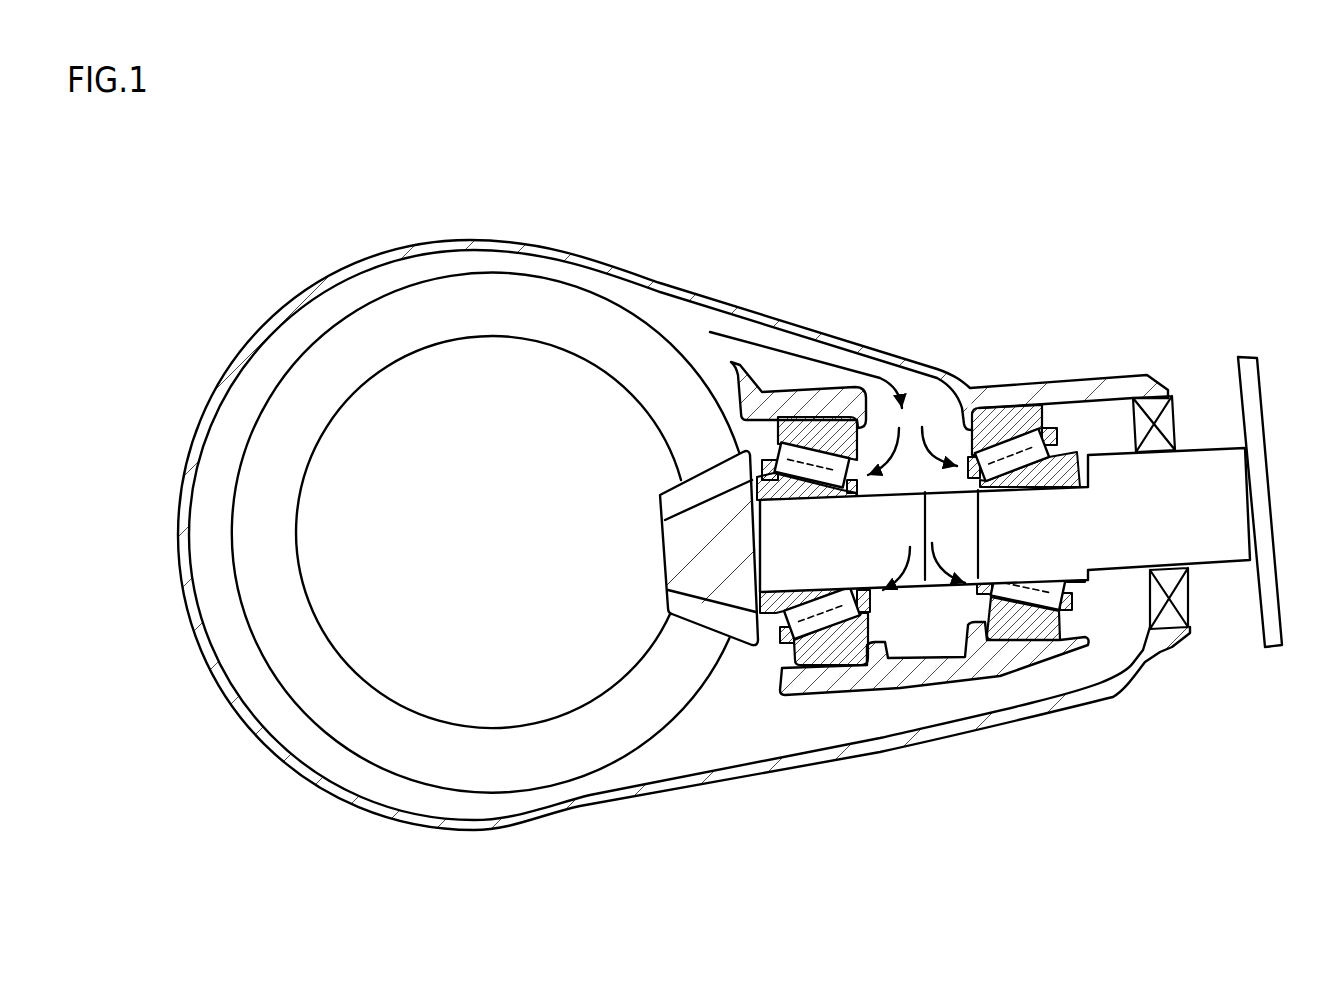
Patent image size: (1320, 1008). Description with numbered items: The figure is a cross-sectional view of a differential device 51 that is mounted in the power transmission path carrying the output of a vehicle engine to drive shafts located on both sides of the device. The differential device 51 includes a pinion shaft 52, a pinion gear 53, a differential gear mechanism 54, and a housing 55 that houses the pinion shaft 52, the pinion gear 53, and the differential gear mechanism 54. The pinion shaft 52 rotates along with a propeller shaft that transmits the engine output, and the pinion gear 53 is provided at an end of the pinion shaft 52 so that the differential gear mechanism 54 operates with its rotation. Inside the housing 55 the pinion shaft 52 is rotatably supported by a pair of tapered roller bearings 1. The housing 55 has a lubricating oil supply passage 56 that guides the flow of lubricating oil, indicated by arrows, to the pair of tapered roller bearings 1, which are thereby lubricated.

The tapered roller bearing 1 is at (801, 412).
The differential device 51 is at (325, 208).
The pinion shaft 52 is at (1211, 443).
The pinion gear 53 is at (735, 630).
The differential gear mechanism 54 is at (497, 400).
The housing 55 is at (694, 298).
The lubricating oil supply passage 56 is at (868, 370).